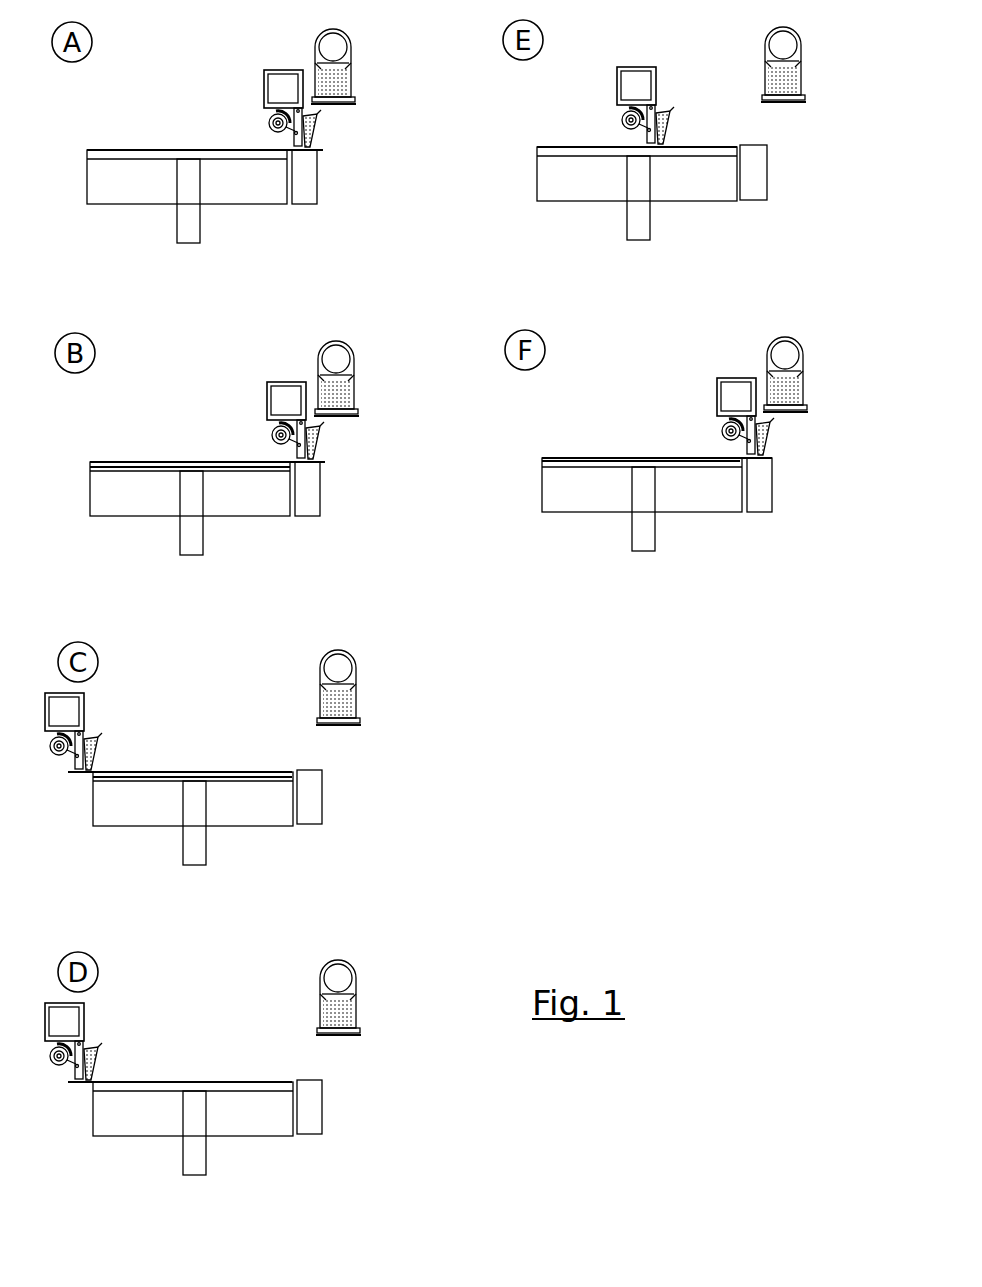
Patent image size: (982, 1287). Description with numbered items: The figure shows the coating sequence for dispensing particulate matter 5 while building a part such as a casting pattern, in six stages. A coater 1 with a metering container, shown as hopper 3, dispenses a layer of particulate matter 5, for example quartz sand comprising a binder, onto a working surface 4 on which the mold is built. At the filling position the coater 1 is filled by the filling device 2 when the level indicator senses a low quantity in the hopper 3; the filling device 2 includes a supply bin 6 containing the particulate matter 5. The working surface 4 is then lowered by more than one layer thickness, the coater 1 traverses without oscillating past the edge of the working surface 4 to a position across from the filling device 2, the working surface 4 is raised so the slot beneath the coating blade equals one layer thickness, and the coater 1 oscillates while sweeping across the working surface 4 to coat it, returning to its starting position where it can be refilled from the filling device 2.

The coater 1 is at (275, 70).
The filling device 2 is at (356, 65).
The hopper 3 is at (313, 126).
The working surface 4 is at (102, 157).
The particulate matter 5 is at (347, 78).
The supply bin 6 is at (753, 173).